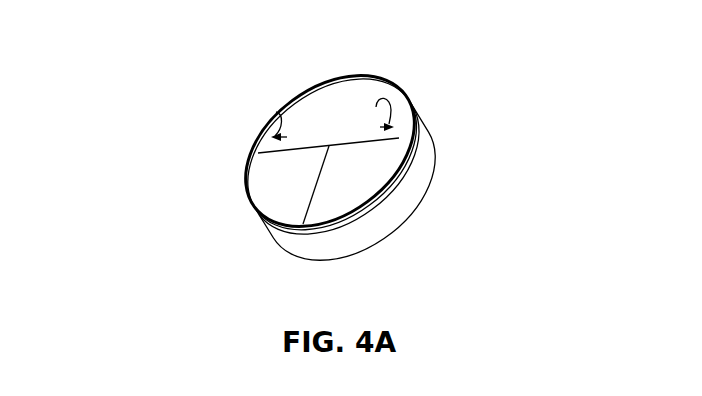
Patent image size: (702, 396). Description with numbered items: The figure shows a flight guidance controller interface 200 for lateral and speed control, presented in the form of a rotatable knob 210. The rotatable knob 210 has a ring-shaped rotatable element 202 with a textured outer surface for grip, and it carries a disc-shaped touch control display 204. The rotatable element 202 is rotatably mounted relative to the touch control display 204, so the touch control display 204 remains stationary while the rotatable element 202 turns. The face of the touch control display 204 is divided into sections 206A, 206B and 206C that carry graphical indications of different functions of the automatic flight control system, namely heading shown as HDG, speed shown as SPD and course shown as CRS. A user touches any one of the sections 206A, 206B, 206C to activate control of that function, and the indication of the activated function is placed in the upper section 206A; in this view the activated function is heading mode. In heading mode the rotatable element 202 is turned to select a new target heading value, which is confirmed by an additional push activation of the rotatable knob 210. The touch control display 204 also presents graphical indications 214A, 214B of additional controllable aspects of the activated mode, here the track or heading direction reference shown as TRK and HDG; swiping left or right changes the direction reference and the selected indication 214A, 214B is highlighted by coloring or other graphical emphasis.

The flight guidance controller interface 200 is at (186, 48).
The rotatable element 202 is at (413, 165).
The touch control display 204 is at (351, 73).
The upper section 206A is at (378, 92).
The section 206B is at (280, 201).
The section 206C is at (344, 195).
The rotatable knob 210 is at (289, 91).
The graphical indication 214A is at (276, 112).
The graphical indication 214B is at (396, 96).